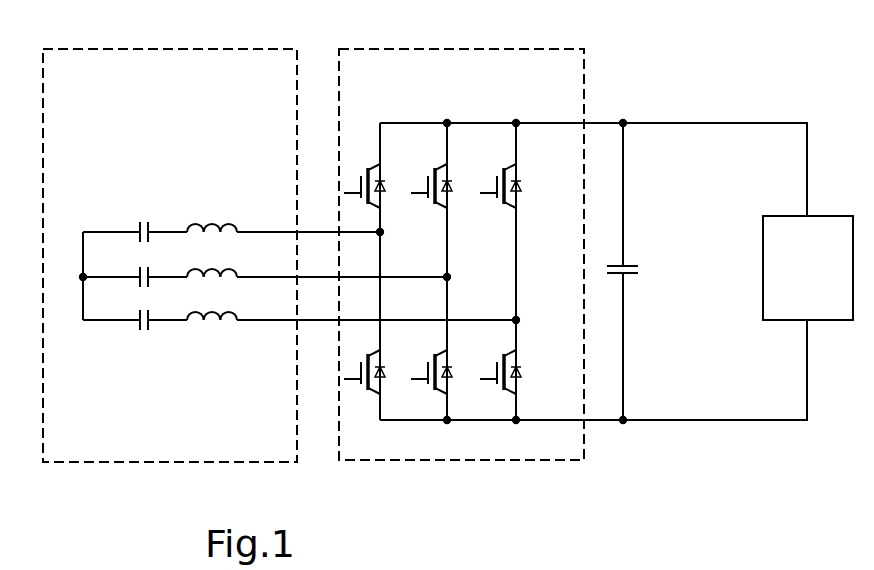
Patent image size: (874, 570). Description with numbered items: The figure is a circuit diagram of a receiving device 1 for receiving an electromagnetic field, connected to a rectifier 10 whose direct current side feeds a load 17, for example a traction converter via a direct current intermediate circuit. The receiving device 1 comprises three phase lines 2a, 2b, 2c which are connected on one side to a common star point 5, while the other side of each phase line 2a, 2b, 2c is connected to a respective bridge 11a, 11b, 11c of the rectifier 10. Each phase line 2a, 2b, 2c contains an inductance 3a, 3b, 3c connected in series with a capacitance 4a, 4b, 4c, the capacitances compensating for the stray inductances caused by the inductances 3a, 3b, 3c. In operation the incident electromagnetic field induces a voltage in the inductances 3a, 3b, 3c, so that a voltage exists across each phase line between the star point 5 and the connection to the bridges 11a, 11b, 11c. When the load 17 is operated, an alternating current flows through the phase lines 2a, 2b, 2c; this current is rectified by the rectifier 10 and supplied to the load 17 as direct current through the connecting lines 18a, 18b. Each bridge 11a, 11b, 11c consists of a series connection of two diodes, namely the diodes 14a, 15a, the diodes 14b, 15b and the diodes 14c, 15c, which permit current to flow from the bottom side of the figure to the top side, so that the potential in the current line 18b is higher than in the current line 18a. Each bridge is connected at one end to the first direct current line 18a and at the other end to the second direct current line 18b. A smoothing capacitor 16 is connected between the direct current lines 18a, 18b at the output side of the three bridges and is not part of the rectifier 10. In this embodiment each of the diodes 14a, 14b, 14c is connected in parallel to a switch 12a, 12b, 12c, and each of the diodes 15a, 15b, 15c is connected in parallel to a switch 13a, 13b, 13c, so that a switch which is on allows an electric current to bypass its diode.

The receiving device 1 is at (162, 48).
The rectifier 10 is at (437, 48).
The phase line 2a is at (83, 230).
The phase line 2b is at (161, 276).
The phase line 2c is at (82, 321).
The inductance 3a is at (222, 212).
The inductance 3b is at (217, 257).
The inductance 3c is at (225, 303).
The capacitance 4a is at (138, 228).
The capacitance 4b is at (140, 274).
The capacitance 4c is at (137, 327).
The star point 5 is at (83, 277).
The bridge 11a is at (382, 261).
The bridge 11b is at (462, 240).
The bridge 11c is at (530, 233).
The switch 12a is at (360, 180).
The switch 12b is at (428, 178).
The switch 12c is at (497, 178).
The switch 13a is at (362, 364).
The switch 13b is at (429, 366).
The switch 13c is at (497, 366).
The diode 14a is at (384, 188).
The diode 14b is at (452, 188).
The diode 14c is at (521, 185).
The diode 15a is at (386, 376).
The diode 15b is at (452, 376).
The diode 15c is at (522, 374).
The smoothing capacitor 16 is at (628, 278).
The load 17 is at (763, 266).
The direct current line 18a is at (663, 121).
The direct current line 18b is at (678, 421).